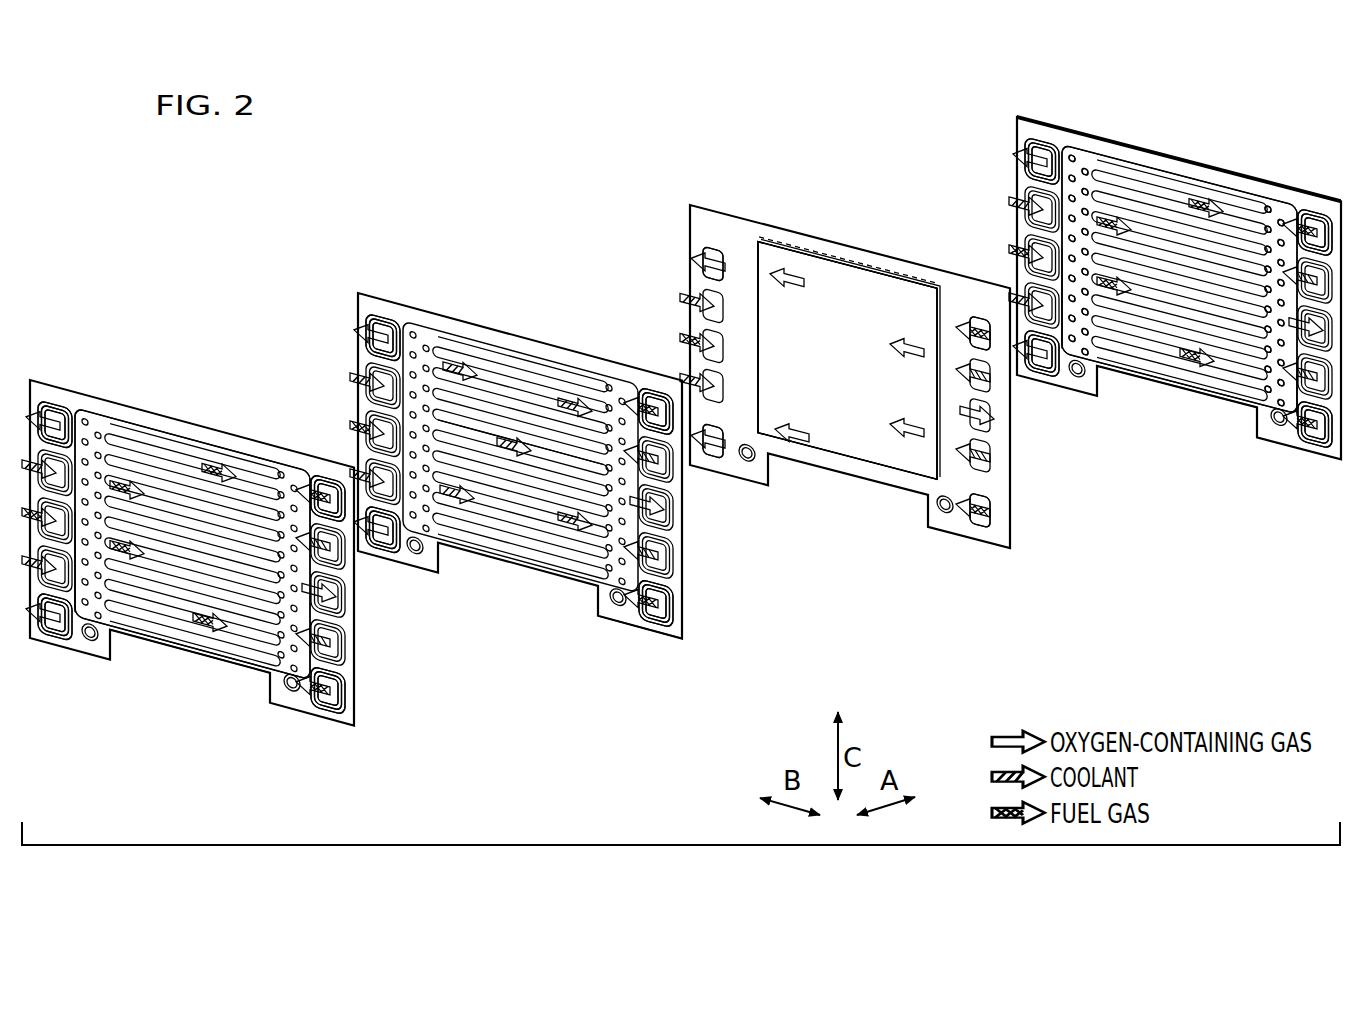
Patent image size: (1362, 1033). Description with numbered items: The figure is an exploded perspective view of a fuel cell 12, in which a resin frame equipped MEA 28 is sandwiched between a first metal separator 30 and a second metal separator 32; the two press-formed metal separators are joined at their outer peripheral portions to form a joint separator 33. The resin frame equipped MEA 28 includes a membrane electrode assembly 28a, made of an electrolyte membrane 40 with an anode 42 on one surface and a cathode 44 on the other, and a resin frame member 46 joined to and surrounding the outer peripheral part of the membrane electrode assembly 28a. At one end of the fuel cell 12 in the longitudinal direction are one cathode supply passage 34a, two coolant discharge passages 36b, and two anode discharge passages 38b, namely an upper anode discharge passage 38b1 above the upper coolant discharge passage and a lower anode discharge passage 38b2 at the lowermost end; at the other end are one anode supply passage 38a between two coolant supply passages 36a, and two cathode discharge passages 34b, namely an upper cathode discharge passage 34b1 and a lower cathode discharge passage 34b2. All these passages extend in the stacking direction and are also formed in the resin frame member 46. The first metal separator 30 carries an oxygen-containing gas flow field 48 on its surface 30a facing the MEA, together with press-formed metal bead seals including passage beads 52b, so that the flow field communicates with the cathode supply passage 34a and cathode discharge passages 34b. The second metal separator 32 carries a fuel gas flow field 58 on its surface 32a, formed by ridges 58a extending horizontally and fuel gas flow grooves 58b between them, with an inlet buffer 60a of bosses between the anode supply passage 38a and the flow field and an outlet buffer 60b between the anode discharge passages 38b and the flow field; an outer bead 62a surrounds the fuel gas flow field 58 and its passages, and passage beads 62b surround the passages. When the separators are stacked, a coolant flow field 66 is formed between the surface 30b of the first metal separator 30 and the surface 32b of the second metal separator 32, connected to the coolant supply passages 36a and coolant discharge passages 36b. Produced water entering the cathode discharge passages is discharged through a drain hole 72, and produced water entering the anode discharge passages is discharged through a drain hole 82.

The fuel cell 12 is at (655, 196).
The resin frame equipped MEA 28 is at (860, 148).
The membrane electrode assembly 28a is at (838, 258).
The first metal separator 30 is at (354, 298).
The surface of first metal separator 30a is at (672, 598).
The surface of first metal separator 30b is at (676, 627).
The second metal separator 32 is at (118, 392).
The surface of second metal separator 32a is at (190, 628).
The surface of second metal separator 32b is at (233, 632).
The joint separator 33 is at (235, 258).
The cathode supply passage 34a is at (333, 600).
The cathode discharge passage 34b is at (55, 410).
The upper cathode discharge passage 34b1 is at (558, 246).
The lower cathode discharge passage 34b2 is at (551, 536).
The coolant supply passage 36a is at (60, 465).
The coolant discharge passage 36b is at (332, 552).
The anode supply passage 38a is at (372, 430).
The anode discharge passage 38b is at (318, 490).
The upper anode discharge passage 38b1 is at (768, 300).
The lower anode discharge passage 38b2 is at (813, 597).
The electrolyte membrane 40 is at (862, 452).
The anode 42 is at (808, 250).
The cathode 44 is at (845, 440).
The resin frame member 46 is at (758, 248).
The oxygen-containing gas flow field 48 is at (545, 395).
The passage bead 52b is at (440, 550).
The fuel gas flow field 58 is at (686, 358).
The ridge 58a is at (150, 438).
The fuel gas flow groove 58b is at (190, 458).
The inlet buffer 60a is at (1077, 163).
The outlet buffer 60b is at (1267, 372).
The outer bead 62a is at (1262, 383).
The passage bead 62b is at (97, 640).
The coolant flow field 66 is at (500, 380).
The drain hole 72 is at (90, 641).
The drain hole 82 is at (291, 692).